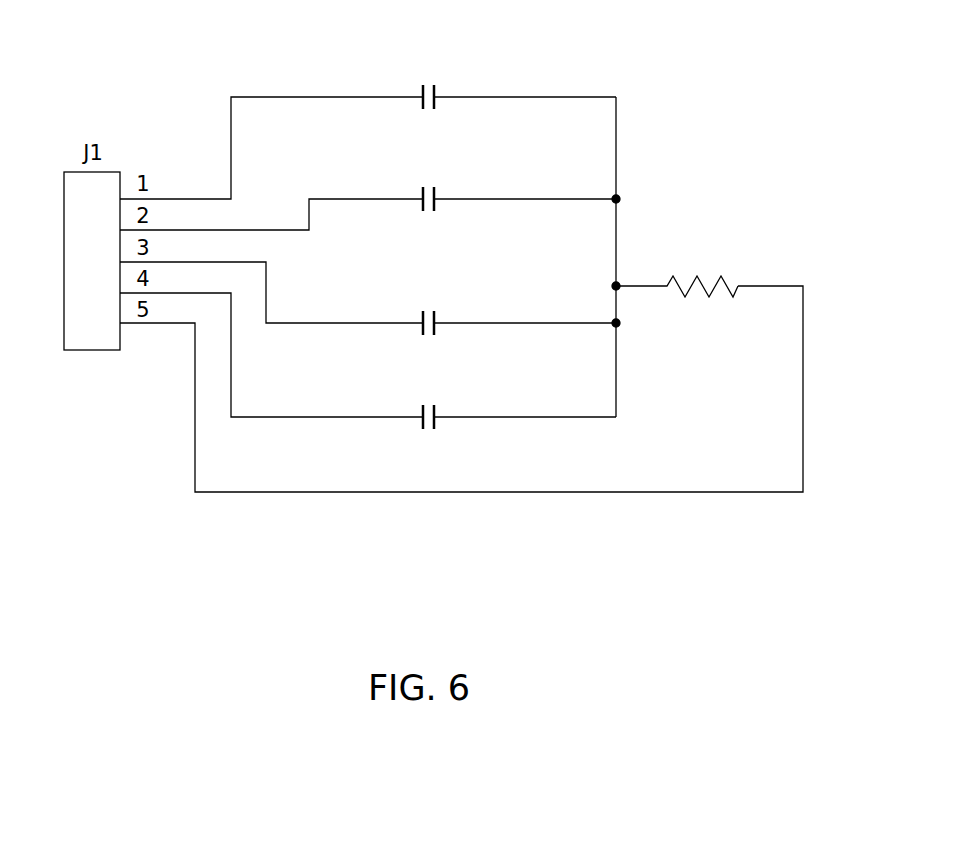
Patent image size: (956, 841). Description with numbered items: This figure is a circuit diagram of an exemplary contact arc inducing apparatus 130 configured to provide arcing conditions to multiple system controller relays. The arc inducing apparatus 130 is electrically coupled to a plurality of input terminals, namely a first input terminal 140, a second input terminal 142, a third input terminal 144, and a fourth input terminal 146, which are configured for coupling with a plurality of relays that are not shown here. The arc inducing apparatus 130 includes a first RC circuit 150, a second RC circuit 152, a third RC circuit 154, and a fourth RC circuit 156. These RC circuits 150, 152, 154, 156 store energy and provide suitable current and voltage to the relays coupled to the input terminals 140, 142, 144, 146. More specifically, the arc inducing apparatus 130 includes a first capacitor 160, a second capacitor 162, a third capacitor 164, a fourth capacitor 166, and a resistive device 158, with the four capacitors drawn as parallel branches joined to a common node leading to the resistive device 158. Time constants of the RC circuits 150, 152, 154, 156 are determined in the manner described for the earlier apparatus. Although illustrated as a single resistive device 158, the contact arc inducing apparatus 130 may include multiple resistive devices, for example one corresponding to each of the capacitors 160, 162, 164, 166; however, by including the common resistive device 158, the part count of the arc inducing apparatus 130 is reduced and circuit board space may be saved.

The contact arc inducing apparatus 130 is at (635, 112).
The first input terminal 140 is at (160, 199).
The second input terminal 142 is at (195, 230).
The third input terminal 144 is at (250, 262).
The fourth input terminal 146 is at (176, 293).
The first RC circuit 150 is at (499, 66).
The second RC circuit 152 is at (499, 168).
The third RC circuit 154 is at (499, 293).
The fourth RC circuit 156 is at (499, 387).
The resistive device 158 is at (730, 280).
The first capacitor 160 is at (457, 82).
The second capacitor 162 is at (457, 185).
The third capacitor 164 is at (457, 310).
The fourth capacitor 166 is at (457, 405).